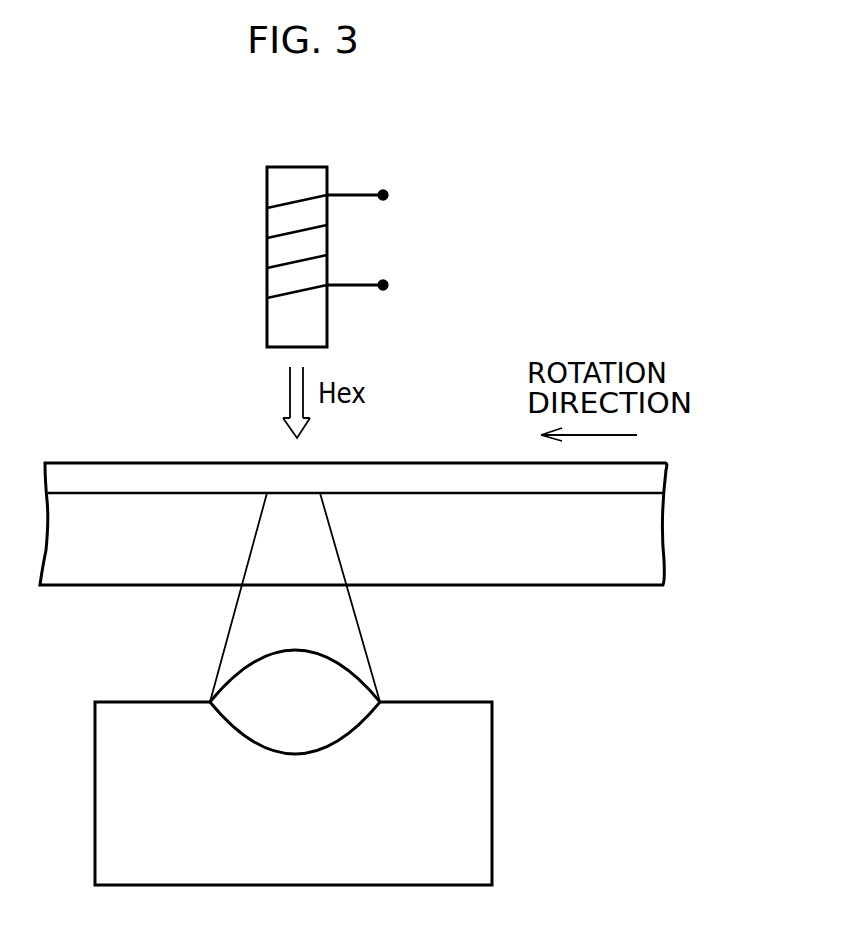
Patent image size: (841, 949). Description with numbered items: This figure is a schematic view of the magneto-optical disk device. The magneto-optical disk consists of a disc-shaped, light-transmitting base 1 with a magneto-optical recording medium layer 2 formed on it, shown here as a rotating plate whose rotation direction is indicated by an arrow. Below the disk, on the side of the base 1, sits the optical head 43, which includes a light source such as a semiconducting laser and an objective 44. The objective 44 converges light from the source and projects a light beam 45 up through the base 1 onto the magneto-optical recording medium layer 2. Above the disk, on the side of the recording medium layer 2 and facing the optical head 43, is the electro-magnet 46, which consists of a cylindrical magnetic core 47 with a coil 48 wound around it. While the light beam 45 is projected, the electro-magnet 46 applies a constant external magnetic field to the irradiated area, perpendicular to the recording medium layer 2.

The base 1 is at (648, 557).
The magneto-optical recording medium layer 2 is at (653, 480).
The optical head 43 is at (492, 850).
The objective 44 is at (352, 702).
The light beam 45 is at (362, 630).
The electro-magnet 46 is at (266, 227).
The magnetic core 47 is at (303, 171).
The coil 48 is at (358, 191).